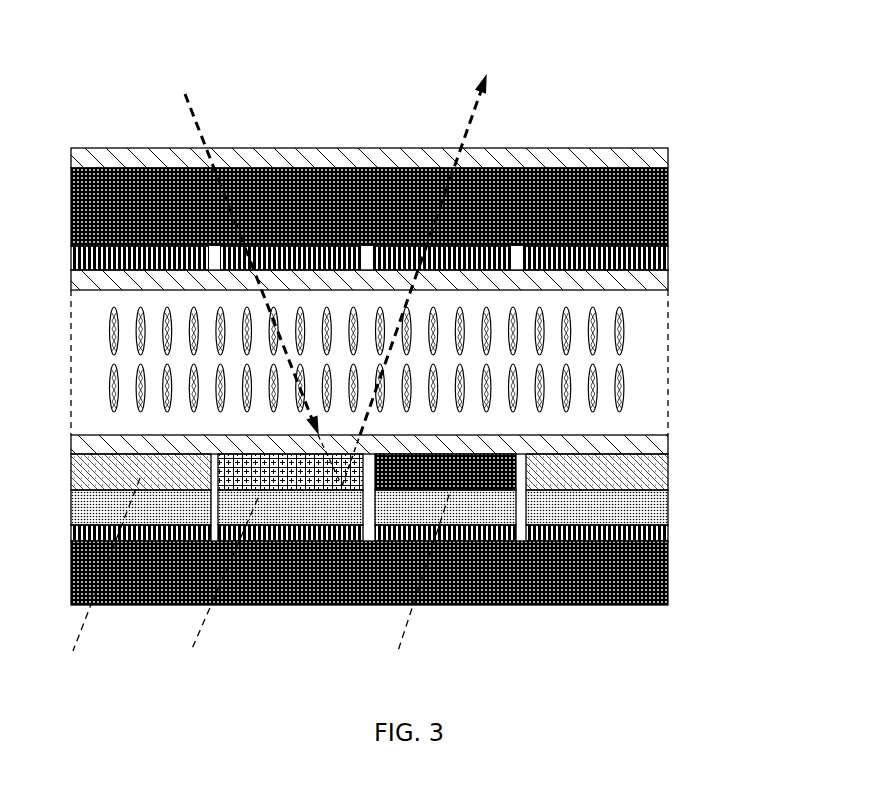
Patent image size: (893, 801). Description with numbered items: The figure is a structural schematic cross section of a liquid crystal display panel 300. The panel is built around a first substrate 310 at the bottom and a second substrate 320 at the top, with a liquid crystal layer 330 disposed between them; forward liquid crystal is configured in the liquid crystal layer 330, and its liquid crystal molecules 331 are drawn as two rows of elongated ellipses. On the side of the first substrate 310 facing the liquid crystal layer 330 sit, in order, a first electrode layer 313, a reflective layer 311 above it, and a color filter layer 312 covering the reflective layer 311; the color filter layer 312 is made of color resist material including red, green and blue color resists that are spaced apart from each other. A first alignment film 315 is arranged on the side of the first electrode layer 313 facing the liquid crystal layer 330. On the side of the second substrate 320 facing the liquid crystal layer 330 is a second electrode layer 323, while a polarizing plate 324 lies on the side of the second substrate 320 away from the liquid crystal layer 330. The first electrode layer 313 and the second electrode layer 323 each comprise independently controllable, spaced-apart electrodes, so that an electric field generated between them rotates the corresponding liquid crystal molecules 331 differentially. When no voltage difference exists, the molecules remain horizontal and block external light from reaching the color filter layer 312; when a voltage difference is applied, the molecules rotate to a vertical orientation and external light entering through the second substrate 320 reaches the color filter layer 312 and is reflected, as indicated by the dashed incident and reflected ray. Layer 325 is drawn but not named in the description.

The liquid crystal display panel 300 is at (80, 49).
The polarizing plate 324 is at (653, 160).
The second substrate 320 is at (662, 195).
The second electrode layer 323 is at (660, 247).
The upper alignment layer 325 is at (660, 273).
The liquid crystal molecules 331 is at (614, 338).
The liquid crystal layer 330 is at (418, 362).
The first alignment film 315 is at (660, 440).
The color filter layer 312 is at (660, 465).
The reflective layer 311 is at (660, 500).
The first electrode layer 313 is at (655, 523).
The first substrate 310 is at (660, 563).